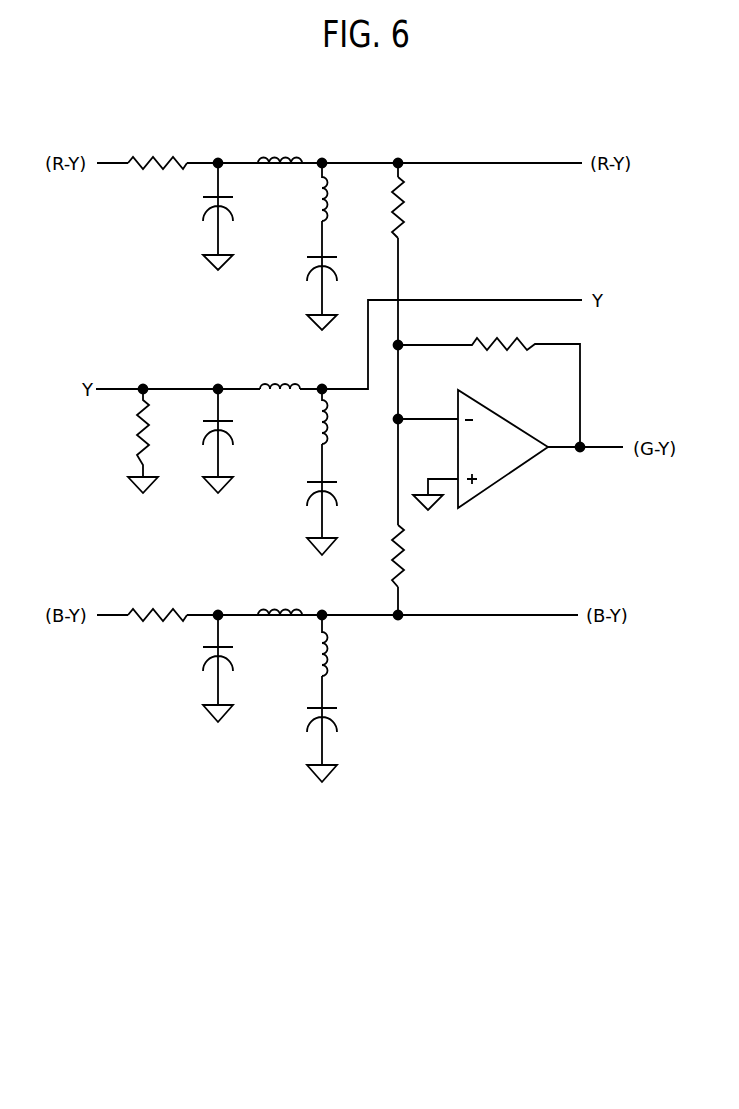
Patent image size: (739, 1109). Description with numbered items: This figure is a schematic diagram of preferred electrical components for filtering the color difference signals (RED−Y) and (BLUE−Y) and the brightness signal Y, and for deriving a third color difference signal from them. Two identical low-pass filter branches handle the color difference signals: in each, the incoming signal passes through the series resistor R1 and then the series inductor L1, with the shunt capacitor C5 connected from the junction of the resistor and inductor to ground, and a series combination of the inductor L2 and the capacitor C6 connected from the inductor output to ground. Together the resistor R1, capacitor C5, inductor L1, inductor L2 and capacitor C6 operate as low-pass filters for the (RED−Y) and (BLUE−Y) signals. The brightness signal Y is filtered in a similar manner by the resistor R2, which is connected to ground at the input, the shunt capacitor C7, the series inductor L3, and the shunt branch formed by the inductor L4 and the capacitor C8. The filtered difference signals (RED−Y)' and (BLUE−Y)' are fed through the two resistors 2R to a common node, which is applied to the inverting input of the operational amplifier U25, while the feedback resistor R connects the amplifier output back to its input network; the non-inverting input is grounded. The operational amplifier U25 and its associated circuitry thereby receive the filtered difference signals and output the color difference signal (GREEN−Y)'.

The resistor R1 is at (157, 376).
The inductor L1 is at (280, 375).
The capacitor C5 is at (232, 442).
The inductor L2 is at (338, 419).
The capacitor C6 is at (337, 501).
The resistor 2R is at (413, 382).
The resistor R is at (489, 392).
The operational amplifier U25 is at (510, 450).
The resistor R2 is at (133, 441).
The capacitor C7 is at (231, 441).
The inductor L3 is at (280, 375).
The inductor L4 is at (338, 416).
The capacitor C8 is at (336, 499).